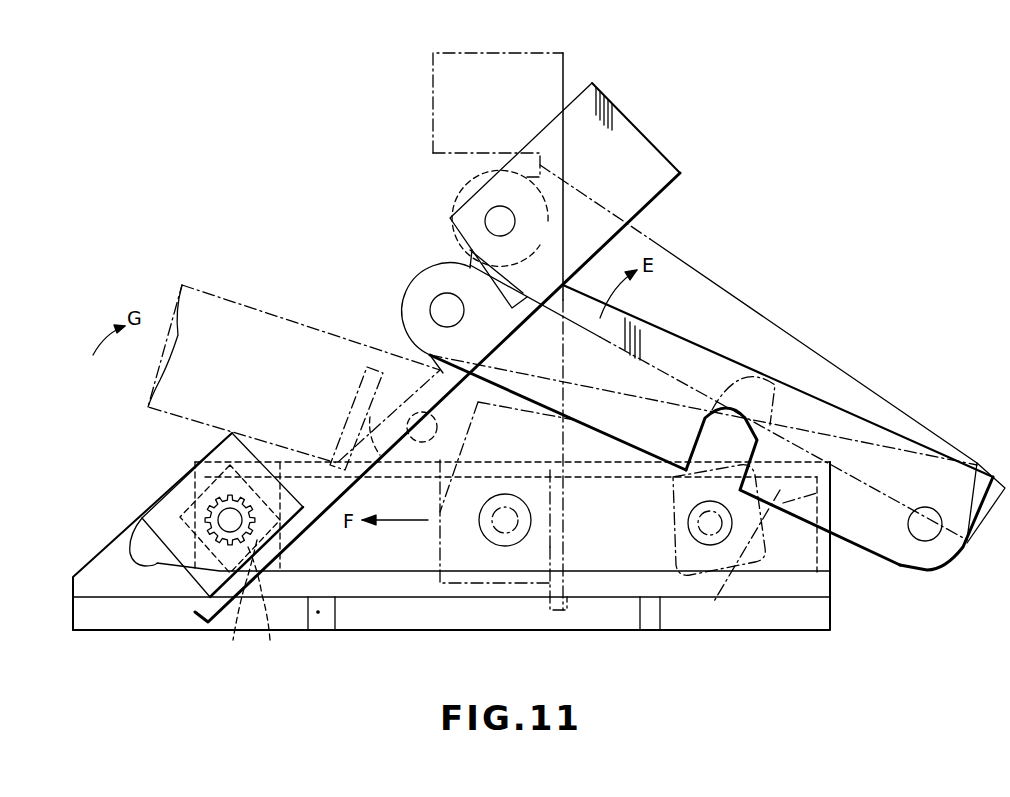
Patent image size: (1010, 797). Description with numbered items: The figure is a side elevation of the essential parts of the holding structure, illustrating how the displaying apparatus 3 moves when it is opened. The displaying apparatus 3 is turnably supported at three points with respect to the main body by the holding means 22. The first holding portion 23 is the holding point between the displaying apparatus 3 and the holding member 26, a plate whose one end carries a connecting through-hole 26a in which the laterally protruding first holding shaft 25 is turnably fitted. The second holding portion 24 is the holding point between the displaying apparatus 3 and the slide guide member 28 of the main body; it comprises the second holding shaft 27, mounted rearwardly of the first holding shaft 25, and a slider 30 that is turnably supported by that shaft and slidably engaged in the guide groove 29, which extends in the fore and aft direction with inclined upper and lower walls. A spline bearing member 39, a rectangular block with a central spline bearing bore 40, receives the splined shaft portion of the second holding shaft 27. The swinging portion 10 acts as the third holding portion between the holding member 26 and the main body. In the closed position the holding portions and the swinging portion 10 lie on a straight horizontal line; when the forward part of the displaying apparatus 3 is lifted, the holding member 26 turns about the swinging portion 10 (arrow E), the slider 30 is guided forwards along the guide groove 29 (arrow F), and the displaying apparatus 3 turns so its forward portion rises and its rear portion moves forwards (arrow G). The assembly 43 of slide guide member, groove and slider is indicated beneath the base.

The displaying apparatus 3 is at (433, 93).
The swinging portion 10 is at (925, 542).
The holding means 22 is at (333, 170).
The first holding portion 23 is at (437, 297).
The second holding portion 24 is at (225, 508).
The first holding shaft 25 is at (485, 215).
The holding member 26 is at (633, 390).
The connecting through-hole 26a is at (566, 180).
The second holding shaft 27 is at (225, 530).
The slide guide member 28 is at (95, 597).
The guide groove 29 is at (352, 572).
The slider 30 is at (142, 566).
The spline bearing member 39 is at (234, 599).
The spline bearing bore 40 is at (267, 602).
The base assembly 43 is at (196, 682).